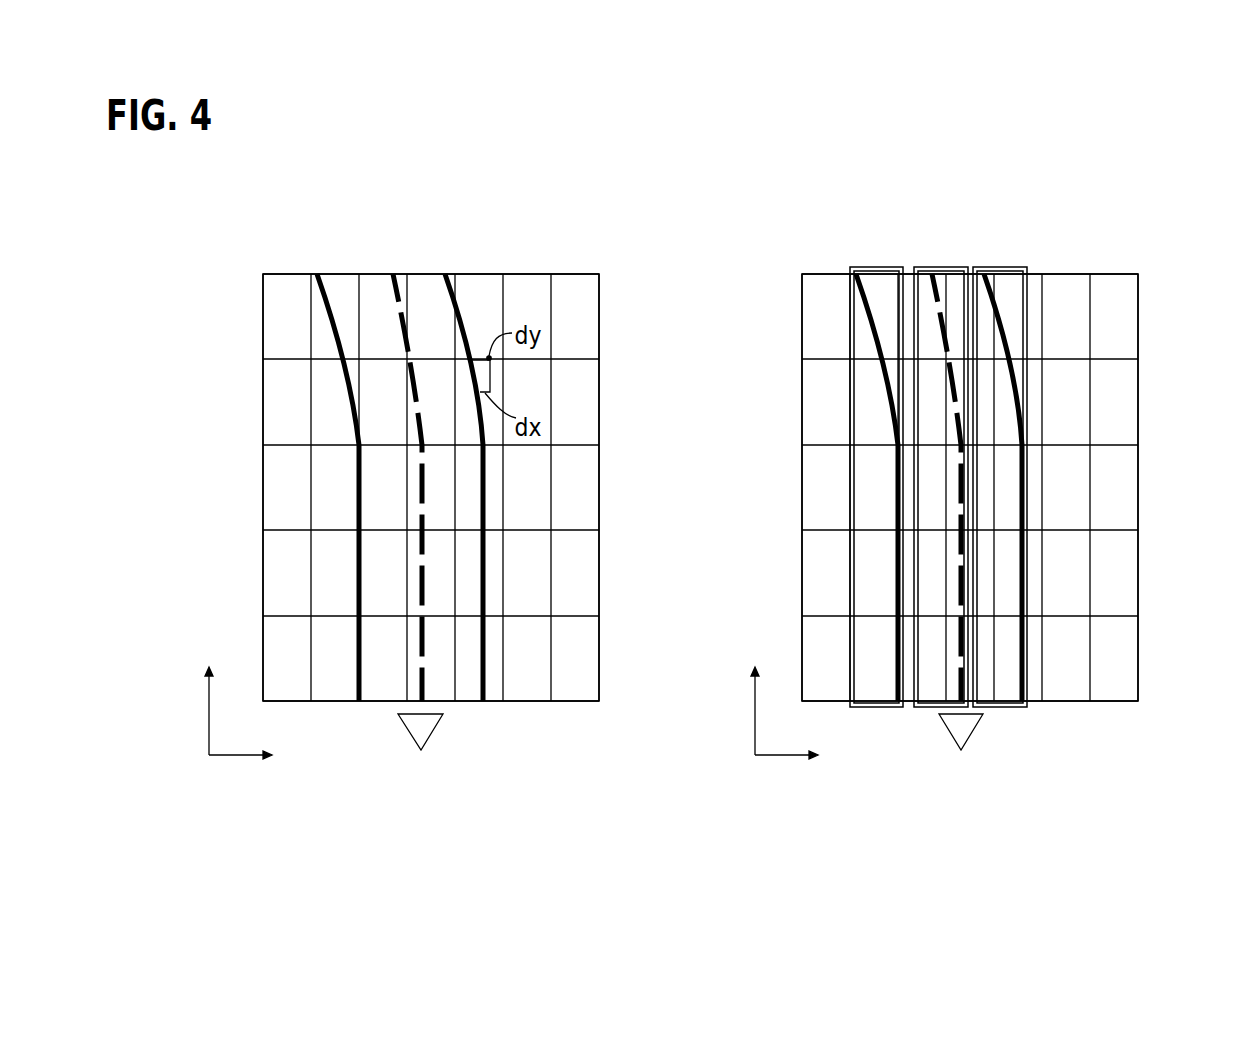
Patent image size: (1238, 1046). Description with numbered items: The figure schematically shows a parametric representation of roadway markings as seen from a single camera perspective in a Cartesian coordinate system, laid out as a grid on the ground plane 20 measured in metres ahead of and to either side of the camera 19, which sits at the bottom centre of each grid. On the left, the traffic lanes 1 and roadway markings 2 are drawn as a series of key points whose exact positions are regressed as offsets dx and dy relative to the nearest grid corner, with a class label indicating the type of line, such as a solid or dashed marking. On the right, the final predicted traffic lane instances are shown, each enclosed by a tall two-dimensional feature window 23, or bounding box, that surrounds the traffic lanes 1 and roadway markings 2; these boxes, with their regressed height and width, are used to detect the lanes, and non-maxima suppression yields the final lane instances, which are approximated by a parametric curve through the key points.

The traffic lane 1 is at (368, 292).
The roadway marking 2 is at (330, 285).
The camera 19 is at (421, 738).
The ground plane 20 is at (582, 273).
The 2d feature window 23 is at (850, 302).